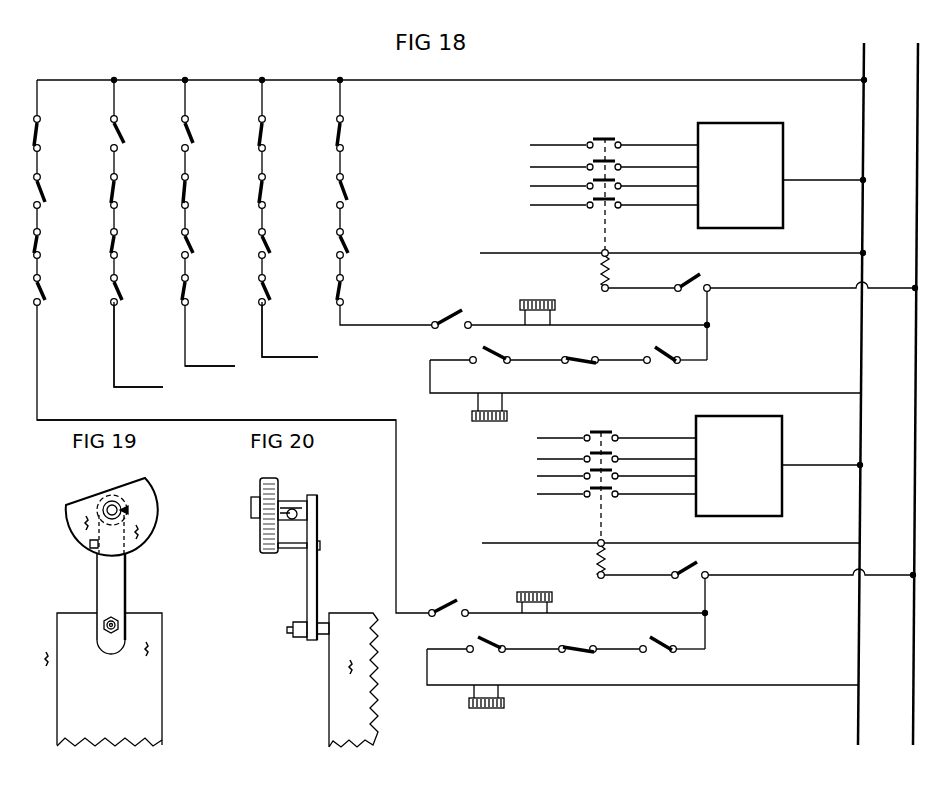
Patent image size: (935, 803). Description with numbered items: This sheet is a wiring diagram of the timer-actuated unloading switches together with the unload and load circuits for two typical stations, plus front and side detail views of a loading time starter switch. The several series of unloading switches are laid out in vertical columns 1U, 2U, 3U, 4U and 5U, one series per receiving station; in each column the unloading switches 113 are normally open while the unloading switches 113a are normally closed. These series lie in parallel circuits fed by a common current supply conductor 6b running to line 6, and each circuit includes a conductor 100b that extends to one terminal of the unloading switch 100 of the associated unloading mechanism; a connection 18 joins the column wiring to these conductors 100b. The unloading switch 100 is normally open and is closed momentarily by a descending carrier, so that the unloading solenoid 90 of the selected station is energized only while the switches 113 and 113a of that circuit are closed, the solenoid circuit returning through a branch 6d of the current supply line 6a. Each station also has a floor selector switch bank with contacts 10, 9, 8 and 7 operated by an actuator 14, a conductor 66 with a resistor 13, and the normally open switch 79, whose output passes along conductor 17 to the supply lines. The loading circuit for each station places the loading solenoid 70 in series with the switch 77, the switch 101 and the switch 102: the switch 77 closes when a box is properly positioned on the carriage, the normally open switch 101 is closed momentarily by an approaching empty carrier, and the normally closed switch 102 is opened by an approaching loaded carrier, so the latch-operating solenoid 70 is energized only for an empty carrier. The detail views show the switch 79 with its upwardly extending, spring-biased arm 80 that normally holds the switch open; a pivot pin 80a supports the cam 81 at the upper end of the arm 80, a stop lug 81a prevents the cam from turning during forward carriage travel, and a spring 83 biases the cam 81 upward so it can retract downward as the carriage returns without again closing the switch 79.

In FIG. 18, the line 6 is at (867, 233).
In FIG. 18, the current supply line 6a is at (914, 330).
In FIG. 18, the common current supply conductor 6b is at (545, 81).
In FIG. 18, the branch of current supply line 6d is at (648, 324).
In FIG. 18, the series of unloading switches 1U is at (37, 88).
In FIG. 18, the series of unloading switches 2U is at (114, 88).
In FIG. 18, the series of unloading switches 3U is at (185, 88).
In FIG. 18, the series of unloading switches 4U is at (262, 88).
In FIG. 18, the series of unloading switches 5U is at (340, 88).
In FIG. 18, the unloading switch 113 is at (45, 192).
In FIG. 18, the unloading switch 113a is at (41, 136).
In FIG. 18, the conductor 18 is at (185, 330).
In FIG. 18, the conductor 100b is at (138, 388).
In FIG. 18, the electric switch 100 is at (444, 318).
In FIG. 18, the unloading solenoid 90 is at (545, 300).
In FIG. 18, the switch 77 is at (497, 350).
In FIG. 18, the switch 102 is at (578, 352).
In FIG. 18, the switch 101 is at (664, 348).
In FIG. 18, the loading solenoid 70 is at (492, 421).
In FIG. 18, the conductor 66 is at (550, 252).
In FIG. 18, the resistor 13 is at (612, 276).
In FIG. 18, the switch 79 is at (692, 274).
In FIG. 19, the switch 79 is at (77, 657).
In FIG. 20, the switch 79 is at (343, 673).
In FIG. 18, the conductor 17 is at (790, 290).
In FIG. 18, the selector switch actuator 14 is at (610, 137).
In FIG. 18, the selector switch contact 10 is at (576, 143).
In FIG. 18, the selector switch contact 9 is at (545, 166).
In FIG. 18, the selector switch contact 8 is at (545, 187).
In FIG. 18, the selector switch contact 7 is at (560, 207).
In FIG. 19, the cam 81 is at (75, 515).
In FIG. 20, the cam 81 is at (260, 530).
In FIG. 19, the stop lug 81a is at (90, 545).
In FIG. 20, the stop lug 81a is at (320, 545).
In FIG. 19, the spring 83 is at (118, 495).
In FIG. 20, the spring 83 is at (283, 486).
In FIG. 19, the arm 80 is at (107, 586).
In FIG. 20, the arm 80 is at (310, 586).
In FIG. 19, the pivot pin 80a is at (128, 510).